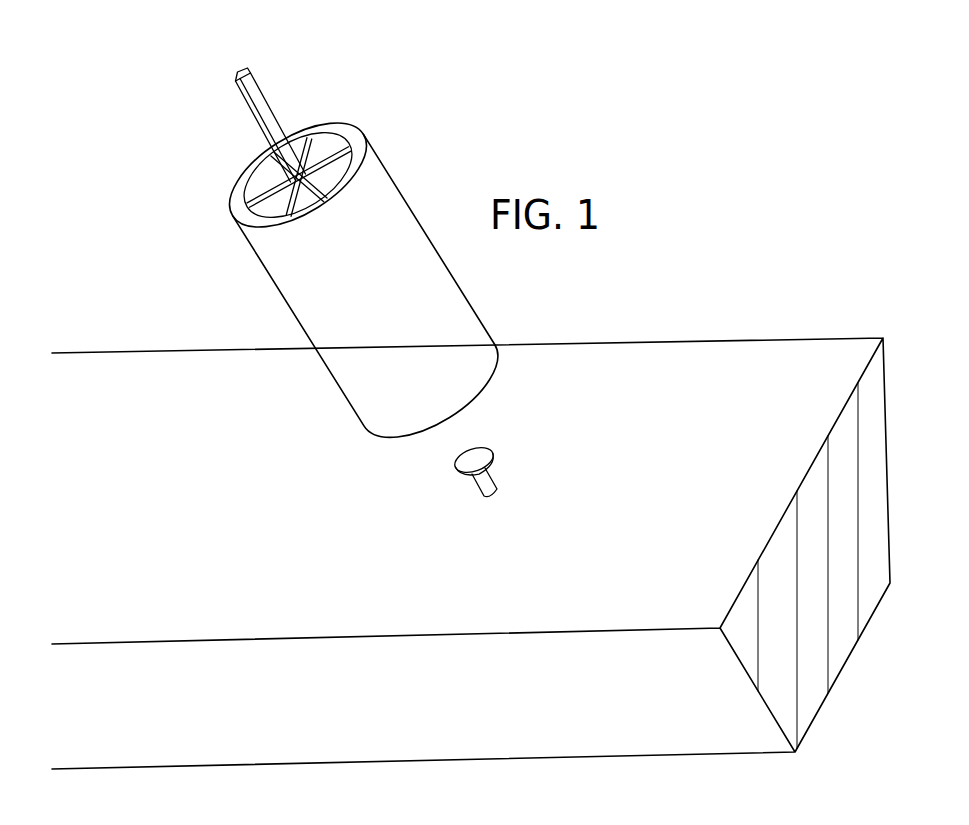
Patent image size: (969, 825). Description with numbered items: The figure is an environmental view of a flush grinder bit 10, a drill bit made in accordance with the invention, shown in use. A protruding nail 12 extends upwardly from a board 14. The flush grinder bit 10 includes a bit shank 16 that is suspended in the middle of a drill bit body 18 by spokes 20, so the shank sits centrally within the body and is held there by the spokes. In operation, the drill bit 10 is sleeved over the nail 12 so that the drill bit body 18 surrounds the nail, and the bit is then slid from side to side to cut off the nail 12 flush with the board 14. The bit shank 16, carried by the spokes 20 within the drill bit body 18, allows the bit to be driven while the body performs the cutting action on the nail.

The flush grinder bit 10 is at (336, 237).
The protruding nail 12 is at (608, 408).
The board 14 is at (471, 553).
The bit shank 16 is at (302, 109).
The drill bit body 18 is at (317, 263).
The spokes 20 is at (260, 195).